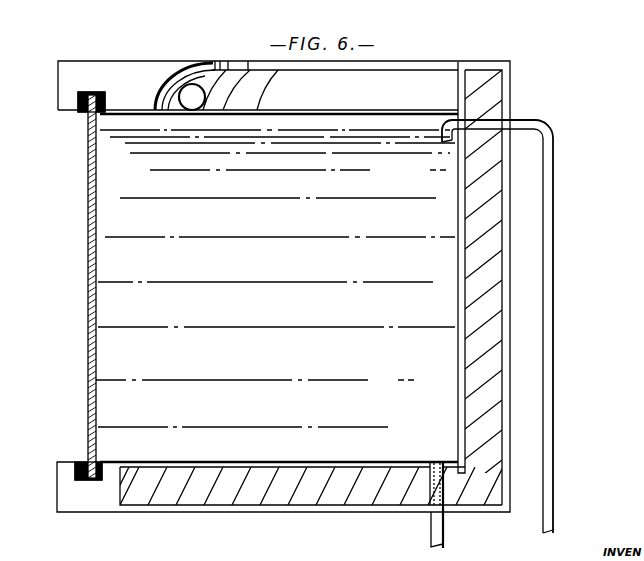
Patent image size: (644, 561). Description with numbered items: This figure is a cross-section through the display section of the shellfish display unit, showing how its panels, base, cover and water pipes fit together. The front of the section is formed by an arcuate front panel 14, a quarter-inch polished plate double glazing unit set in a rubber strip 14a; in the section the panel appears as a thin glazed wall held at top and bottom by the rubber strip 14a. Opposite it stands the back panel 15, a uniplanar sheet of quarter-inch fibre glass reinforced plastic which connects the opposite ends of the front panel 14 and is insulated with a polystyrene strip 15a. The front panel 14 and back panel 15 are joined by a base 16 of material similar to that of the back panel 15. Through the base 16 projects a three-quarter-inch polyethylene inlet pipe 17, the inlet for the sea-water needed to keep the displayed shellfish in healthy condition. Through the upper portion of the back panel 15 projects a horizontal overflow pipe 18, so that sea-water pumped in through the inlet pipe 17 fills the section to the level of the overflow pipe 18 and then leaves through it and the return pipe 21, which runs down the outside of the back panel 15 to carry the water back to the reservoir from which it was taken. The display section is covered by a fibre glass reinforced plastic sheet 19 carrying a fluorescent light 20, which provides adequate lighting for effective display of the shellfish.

The front panel 14 is at (95, 243).
The rubber strip 14a is at (83, 112).
The back panel 15 is at (510, 243).
The polystyrene strip 15a is at (483, 372).
The base 16 is at (312, 510).
The inlet pipe 17 is at (431, 529).
The overflow pipe 18 is at (455, 141).
The fibre glass reinforced plastic sheet 19 is at (385, 101).
The fluorescent light 20 is at (186, 93).
The return pipe 21 is at (543, 319).